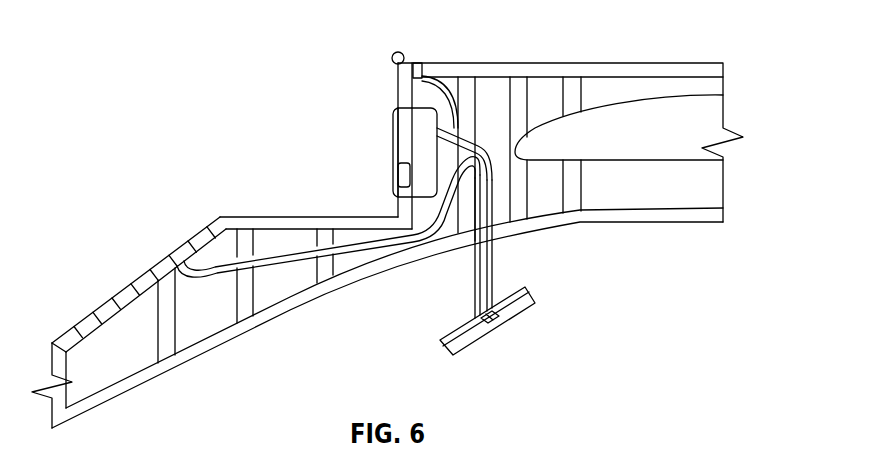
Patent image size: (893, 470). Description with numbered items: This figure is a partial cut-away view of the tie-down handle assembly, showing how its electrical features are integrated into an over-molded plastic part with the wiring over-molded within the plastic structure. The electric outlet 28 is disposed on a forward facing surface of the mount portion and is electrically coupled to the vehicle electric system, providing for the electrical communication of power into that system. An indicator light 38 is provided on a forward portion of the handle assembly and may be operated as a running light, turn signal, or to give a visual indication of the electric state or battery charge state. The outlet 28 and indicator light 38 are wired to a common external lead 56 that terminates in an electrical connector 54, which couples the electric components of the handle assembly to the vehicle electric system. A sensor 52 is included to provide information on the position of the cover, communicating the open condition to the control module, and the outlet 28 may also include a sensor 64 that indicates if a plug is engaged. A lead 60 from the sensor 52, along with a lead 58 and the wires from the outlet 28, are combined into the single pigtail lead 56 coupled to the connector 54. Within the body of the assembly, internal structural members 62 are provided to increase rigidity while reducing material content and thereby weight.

The electric outlet 28 is at (395, 137).
The indicator light 38 is at (111, 276).
The sensor 52 is at (410, 63).
The electrical connector 54 is at (524, 297).
The common external lead 56 is at (486, 247).
The lead 58 is at (277, 272).
The lead 60 is at (424, 76).
The internal structural members 62 is at (572, 78).
The sensor 64 is at (386, 176).